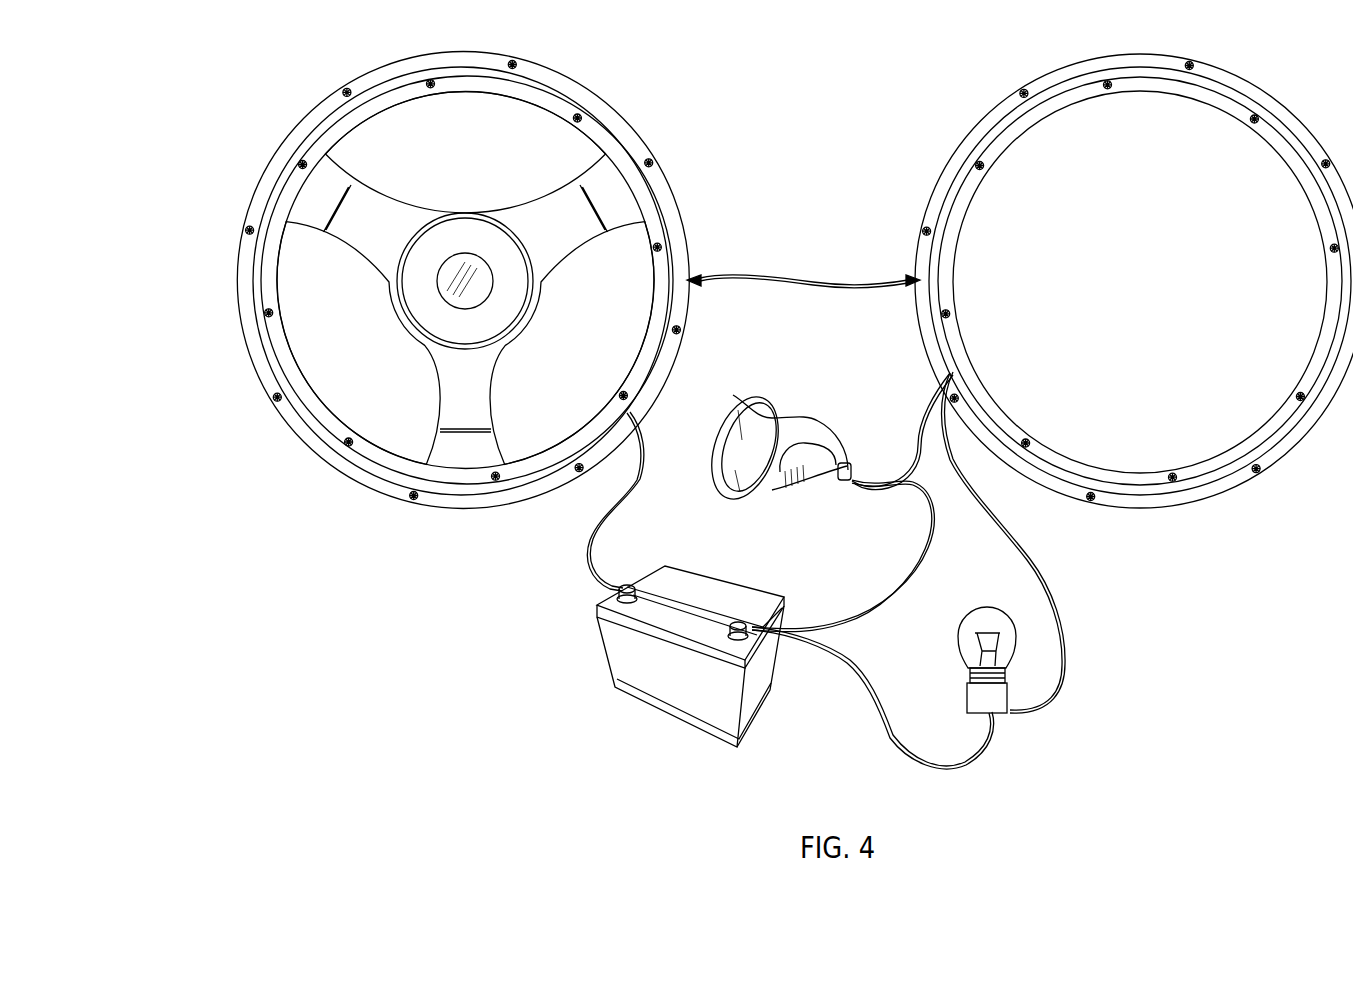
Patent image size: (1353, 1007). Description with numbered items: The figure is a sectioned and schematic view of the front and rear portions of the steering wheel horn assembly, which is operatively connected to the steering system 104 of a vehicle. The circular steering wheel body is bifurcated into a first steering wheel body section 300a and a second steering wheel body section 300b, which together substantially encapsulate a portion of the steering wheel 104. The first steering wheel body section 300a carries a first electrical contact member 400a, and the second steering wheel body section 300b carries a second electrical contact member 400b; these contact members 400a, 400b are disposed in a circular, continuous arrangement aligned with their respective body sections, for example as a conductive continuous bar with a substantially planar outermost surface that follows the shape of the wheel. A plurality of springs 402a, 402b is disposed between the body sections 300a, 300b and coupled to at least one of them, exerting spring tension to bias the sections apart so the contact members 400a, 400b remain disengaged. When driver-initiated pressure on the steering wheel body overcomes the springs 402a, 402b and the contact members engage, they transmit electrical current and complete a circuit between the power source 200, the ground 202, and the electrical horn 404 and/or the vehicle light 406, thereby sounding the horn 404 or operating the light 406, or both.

The steering system 104 is at (445, 383).
The power source 200 is at (640, 675).
The ground 202 is at (843, 287).
The first steering wheel body section 300a is at (645, 152).
The second steering wheel body section 300b is at (1075, 466).
The first electrical contact member 400a is at (282, 177).
The second electrical contact member 400b is at (1225, 470).
The spring 402a is at (248, 231).
The spring 402b is at (280, 396).
The electrical horn 404 is at (795, 458).
The vehicle light 406 is at (990, 703).